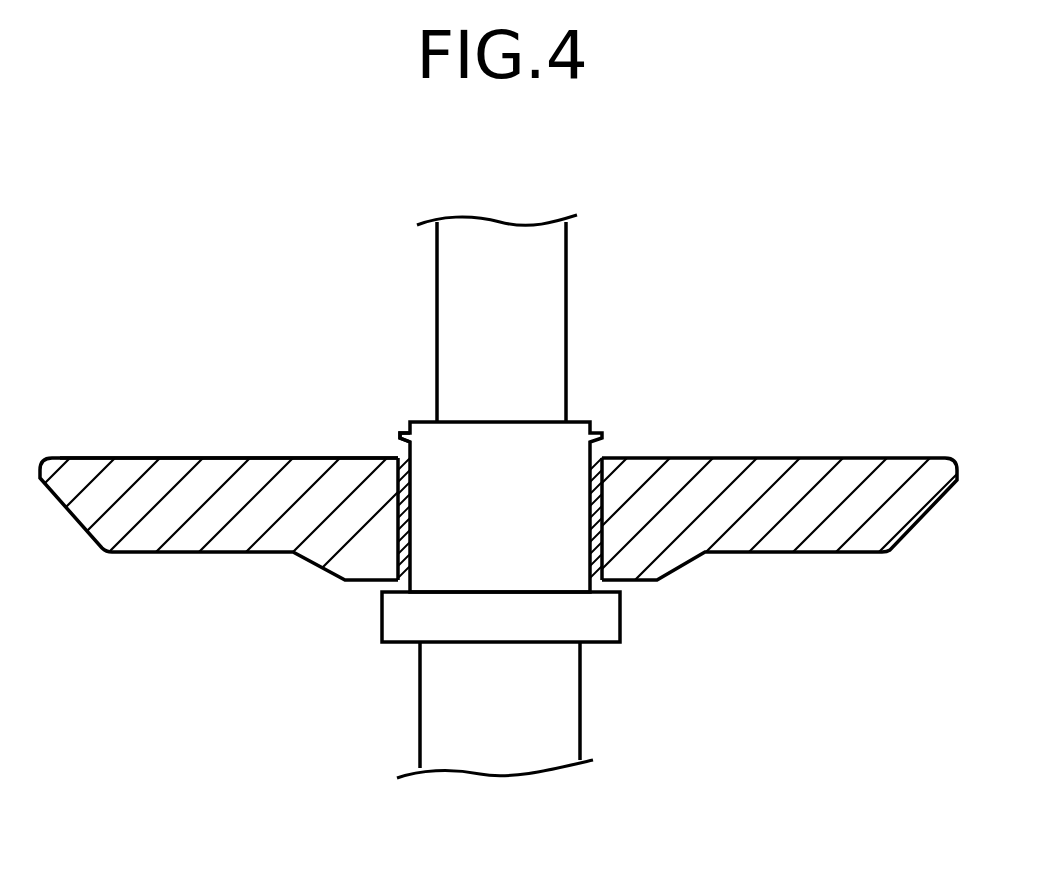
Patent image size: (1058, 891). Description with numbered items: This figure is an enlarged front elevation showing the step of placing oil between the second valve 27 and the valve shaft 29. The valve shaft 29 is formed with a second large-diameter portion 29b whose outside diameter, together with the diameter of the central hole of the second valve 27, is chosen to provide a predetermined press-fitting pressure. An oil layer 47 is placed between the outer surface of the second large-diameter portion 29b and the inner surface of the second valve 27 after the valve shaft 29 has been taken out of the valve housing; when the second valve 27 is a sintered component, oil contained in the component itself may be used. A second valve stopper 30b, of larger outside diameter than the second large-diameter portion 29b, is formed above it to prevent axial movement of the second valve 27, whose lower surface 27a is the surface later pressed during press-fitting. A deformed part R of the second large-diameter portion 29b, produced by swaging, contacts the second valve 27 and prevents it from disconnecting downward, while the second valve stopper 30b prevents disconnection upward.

The second valve 27 is at (225, 457).
The lower surface of the second valve 27a is at (130, 457).
The valve shaft 29 is at (560, 720).
The second large-diameter portion 29b is at (518, 447).
The second valve stopper 30b is at (380, 617).
The oil layer 47 is at (600, 528).
The deformed part R is at (400, 437).